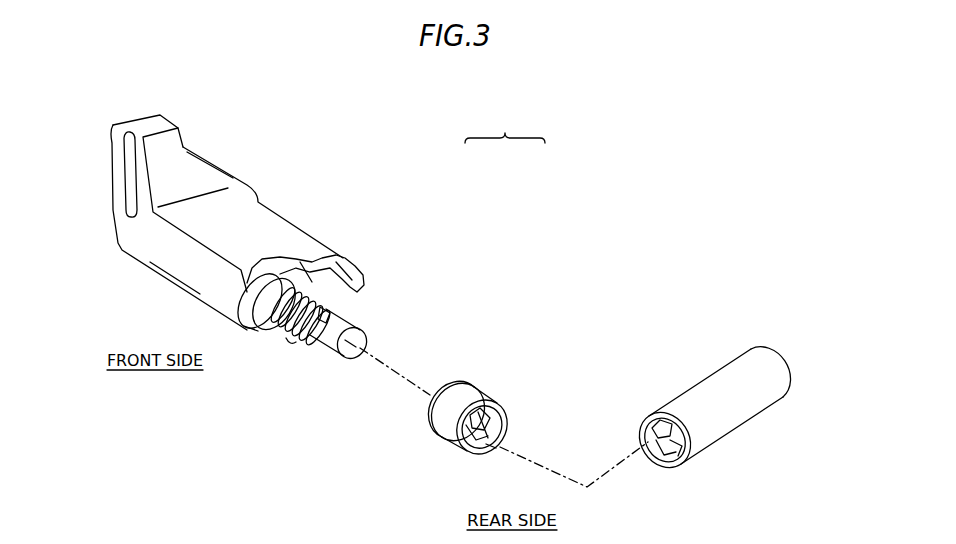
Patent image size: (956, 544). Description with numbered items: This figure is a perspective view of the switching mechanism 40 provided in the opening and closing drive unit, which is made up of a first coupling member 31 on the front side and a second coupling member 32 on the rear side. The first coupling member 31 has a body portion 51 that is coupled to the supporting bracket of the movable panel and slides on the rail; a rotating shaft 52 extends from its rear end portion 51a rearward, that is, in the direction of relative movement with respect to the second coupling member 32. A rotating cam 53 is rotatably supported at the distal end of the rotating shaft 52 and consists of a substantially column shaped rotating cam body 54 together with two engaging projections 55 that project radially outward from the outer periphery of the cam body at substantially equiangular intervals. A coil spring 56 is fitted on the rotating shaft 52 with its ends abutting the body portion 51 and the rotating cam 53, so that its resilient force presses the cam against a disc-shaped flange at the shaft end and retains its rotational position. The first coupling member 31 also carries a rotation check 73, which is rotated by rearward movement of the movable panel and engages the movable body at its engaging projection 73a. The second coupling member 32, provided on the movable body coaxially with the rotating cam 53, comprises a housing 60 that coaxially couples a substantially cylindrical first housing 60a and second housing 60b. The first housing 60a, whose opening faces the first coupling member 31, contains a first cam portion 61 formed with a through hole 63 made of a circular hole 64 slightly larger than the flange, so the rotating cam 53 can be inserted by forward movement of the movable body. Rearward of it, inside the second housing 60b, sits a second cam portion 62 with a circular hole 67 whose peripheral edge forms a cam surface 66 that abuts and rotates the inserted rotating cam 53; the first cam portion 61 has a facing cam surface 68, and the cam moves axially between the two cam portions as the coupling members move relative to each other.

The lock device 40 is at (505, 127).
The first coupling member 31 is at (437, 178).
The second coupling member 32 is at (527, 204).
The body portion 51 is at (275, 213).
The rear end portion 51a is at (215, 300).
The rotation check 73 is at (280, 283).
The engaging projection 73a is at (293, 341).
The coil spring 56 is at (247, 290).
The rotating cam 53 is at (282, 365).
The rotating cam body 54 is at (313, 353).
The engaging projection 55 is at (347, 312).
The rotating shaft 52 is at (365, 330).
The housing 60 is at (572, 424).
The first housing 60a is at (445, 431).
The second housing 60b is at (704, 424).
The cam surface 68 is at (500, 402).
The through hole 63 is at (466, 448).
The circular hole 64 is at (463, 450).
The first cam portion 61 is at (500, 450).
The cam surface 66 is at (648, 417).
The second cam portion 62 is at (652, 463).
The circular hole 67 is at (690, 463).